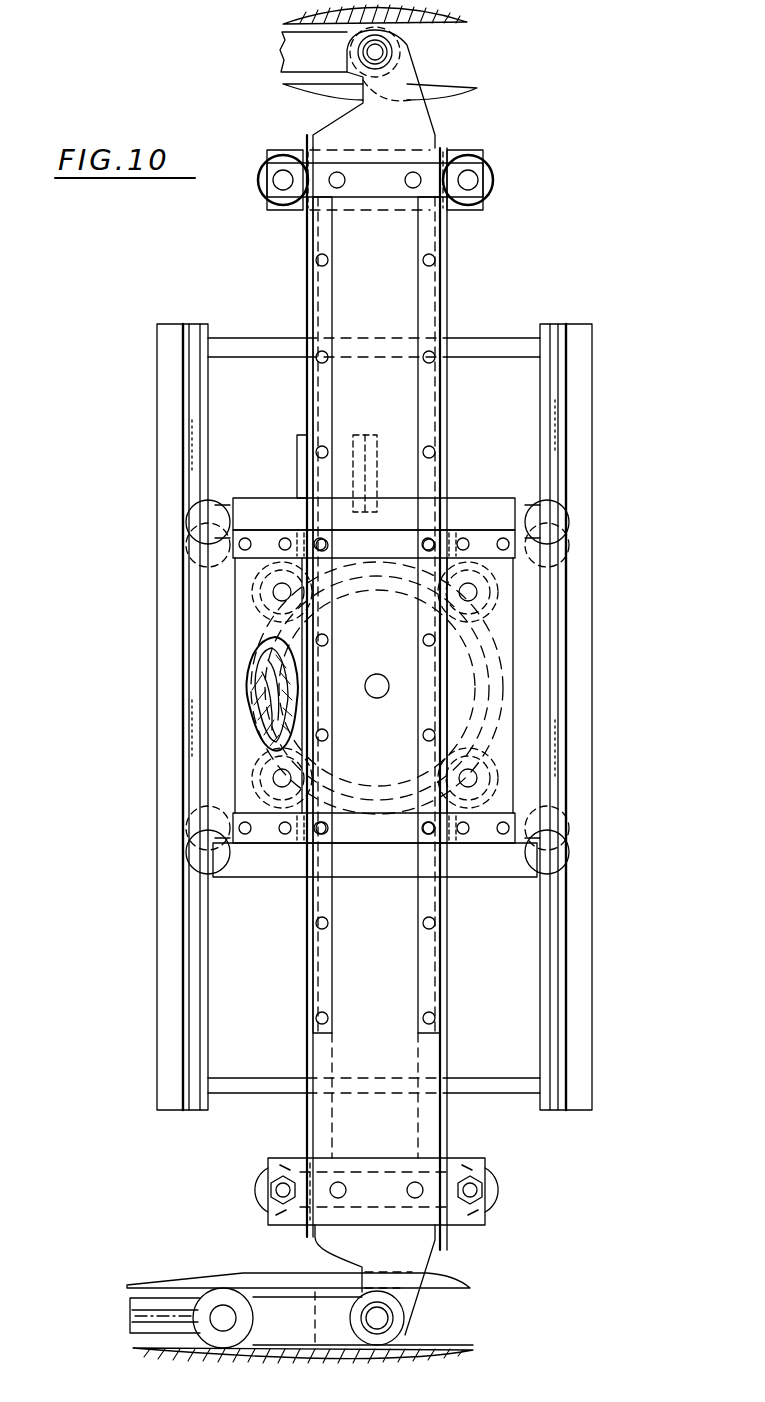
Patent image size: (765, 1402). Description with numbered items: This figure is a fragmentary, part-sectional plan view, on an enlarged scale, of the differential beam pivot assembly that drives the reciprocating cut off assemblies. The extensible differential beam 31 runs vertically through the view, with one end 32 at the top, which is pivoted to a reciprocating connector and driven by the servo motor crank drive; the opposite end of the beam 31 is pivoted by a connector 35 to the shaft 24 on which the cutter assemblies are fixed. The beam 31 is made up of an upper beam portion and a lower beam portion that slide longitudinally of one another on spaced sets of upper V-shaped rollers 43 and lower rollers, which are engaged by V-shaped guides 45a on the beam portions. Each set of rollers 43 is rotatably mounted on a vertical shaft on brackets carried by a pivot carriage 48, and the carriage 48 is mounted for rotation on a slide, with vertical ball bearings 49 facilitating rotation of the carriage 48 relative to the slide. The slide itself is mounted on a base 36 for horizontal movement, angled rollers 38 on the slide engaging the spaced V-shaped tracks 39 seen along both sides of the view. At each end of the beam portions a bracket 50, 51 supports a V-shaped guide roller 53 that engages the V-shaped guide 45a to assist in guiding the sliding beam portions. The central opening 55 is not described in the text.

The shaft 24 is at (130, 1310).
The differential beam 31 is at (290, 314).
The end of differential beam 32 is at (413, 72).
The connector 35 is at (400, 1297).
The base 36 is at (580, 340).
The angled rollers 38 is at (206, 515).
The V-shaped tracks 39 is at (552, 332).
The upper V-shaped rollers 43 is at (280, 592).
The V-shaped guide 45a is at (420, 973).
The pivot carriage 48 is at (243, 702).
The vertical ball bearings 49 is at (243, 702).
The bracket 50 is at (262, 1205).
The bracket 51 is at (278, 152).
The V-shaped guide roller 53 is at (262, 197).
The center hole 55 is at (379, 674).